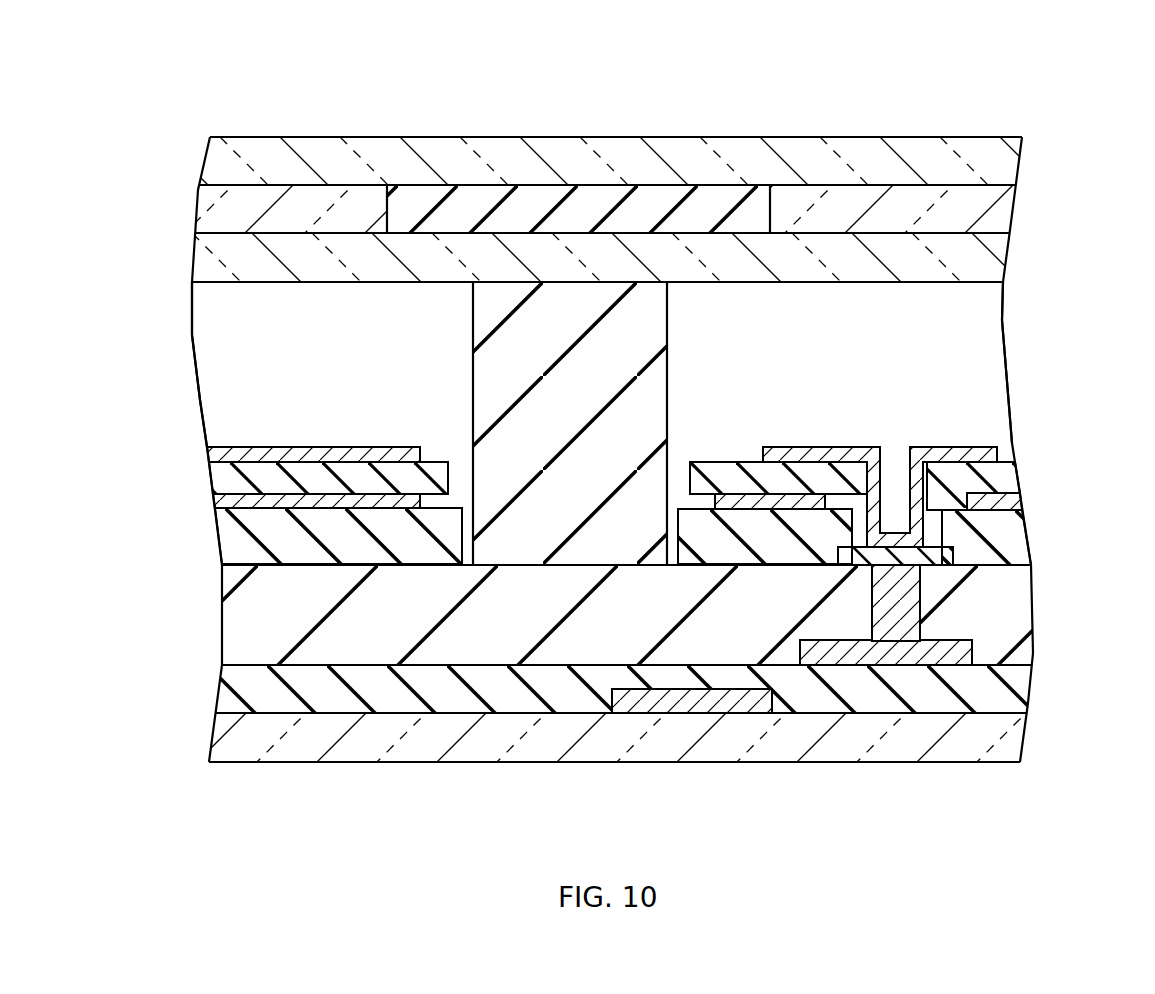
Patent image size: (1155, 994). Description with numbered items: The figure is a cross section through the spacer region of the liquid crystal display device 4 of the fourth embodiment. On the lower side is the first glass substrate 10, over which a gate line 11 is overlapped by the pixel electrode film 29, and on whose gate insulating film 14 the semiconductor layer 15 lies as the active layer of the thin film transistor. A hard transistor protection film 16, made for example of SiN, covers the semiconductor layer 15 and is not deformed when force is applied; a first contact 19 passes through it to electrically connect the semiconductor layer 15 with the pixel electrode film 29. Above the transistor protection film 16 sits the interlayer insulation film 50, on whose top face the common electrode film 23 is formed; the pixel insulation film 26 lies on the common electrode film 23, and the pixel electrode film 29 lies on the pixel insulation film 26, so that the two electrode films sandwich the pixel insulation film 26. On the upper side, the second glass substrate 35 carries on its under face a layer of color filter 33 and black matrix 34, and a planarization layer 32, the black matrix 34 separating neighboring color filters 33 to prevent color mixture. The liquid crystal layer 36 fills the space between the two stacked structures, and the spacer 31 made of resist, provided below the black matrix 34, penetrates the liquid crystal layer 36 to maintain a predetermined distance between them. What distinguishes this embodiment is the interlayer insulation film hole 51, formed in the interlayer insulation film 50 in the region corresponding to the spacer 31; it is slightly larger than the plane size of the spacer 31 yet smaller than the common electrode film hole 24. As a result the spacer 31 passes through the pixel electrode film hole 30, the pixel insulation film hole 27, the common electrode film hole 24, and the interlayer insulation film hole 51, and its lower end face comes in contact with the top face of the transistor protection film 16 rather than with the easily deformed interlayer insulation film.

The liquid crystal display device 4 is at (1012, 74).
The first glass substrate 10 is at (1015, 723).
The gate line 11 is at (646, 703).
The gate insulating film 14 is at (1022, 677).
The semiconductor layer 15 is at (945, 653).
The transistor protection film 16 is at (1022, 583).
The first contact 19 is at (897, 610).
The common electrode film 23 is at (1018, 495).
The common electrode film hole 24 is at (715, 508).
The pixel insulation film 26 is at (1018, 467).
The pixel insulation film hole 27 is at (450, 483).
The pixel electrode film 29 is at (997, 448).
The pixel electrode film hole 30 is at (420, 452).
The spacer 31 is at (505, 300).
The planarization layer 32 is at (990, 262).
The color filter 33 is at (1000, 214).
The black matrix 34 is at (628, 208).
The second glass substrate 35 is at (998, 165).
The liquid crystal layer 36 is at (987, 338).
The interlayer insulation film 50 is at (1017, 527).
The interlayer insulation film hole 51 is at (463, 525).